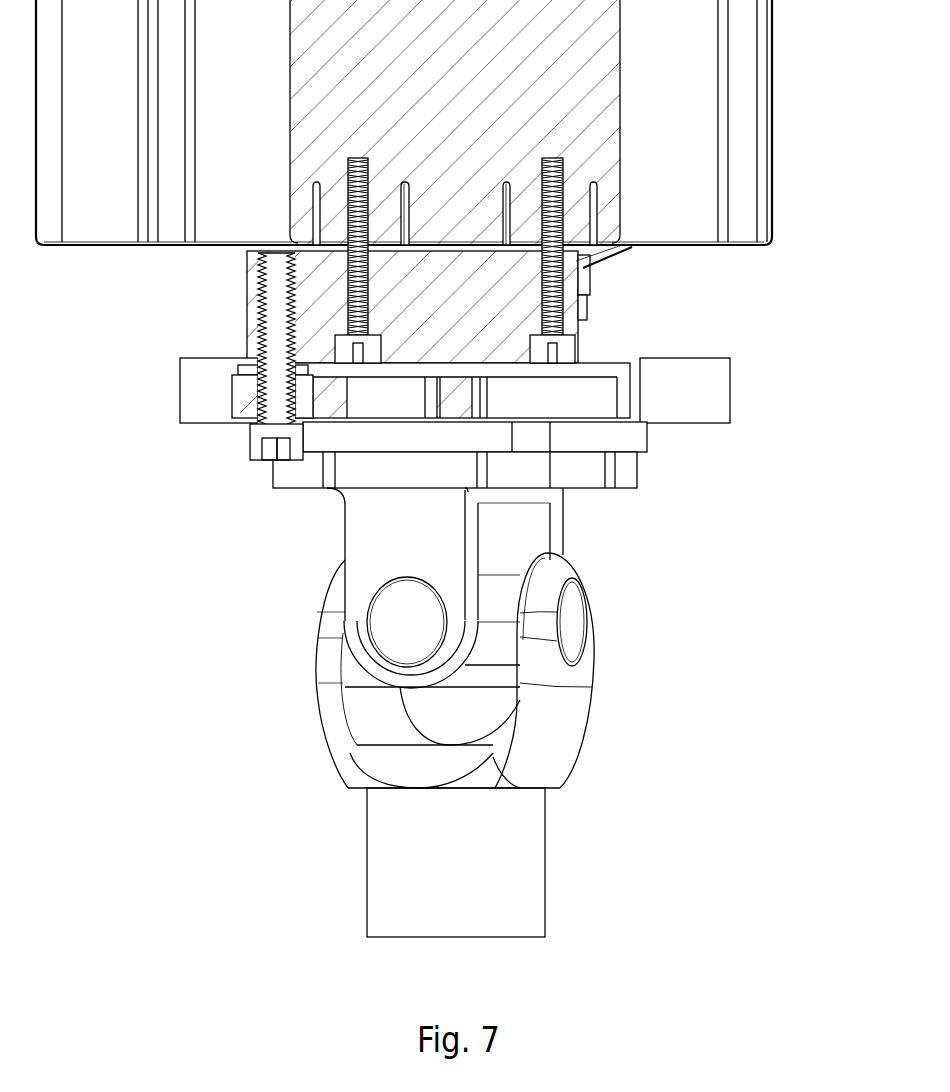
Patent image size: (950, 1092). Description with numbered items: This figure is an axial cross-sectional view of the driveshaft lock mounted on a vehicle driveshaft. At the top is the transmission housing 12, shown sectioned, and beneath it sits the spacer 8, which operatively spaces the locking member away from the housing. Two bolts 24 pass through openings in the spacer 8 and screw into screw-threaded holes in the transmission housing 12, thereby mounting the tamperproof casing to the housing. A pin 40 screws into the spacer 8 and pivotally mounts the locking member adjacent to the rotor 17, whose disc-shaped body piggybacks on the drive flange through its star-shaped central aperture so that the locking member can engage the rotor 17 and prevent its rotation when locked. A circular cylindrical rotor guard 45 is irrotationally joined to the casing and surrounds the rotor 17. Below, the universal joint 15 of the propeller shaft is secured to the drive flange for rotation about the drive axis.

The transmission housing 12 is at (752, 145).
The spacer 8 is at (449, 334).
The bolts 24 is at (373, 289).
The rotor 17 is at (585, 393).
The rotor guard 45 is at (722, 395).
The pin 40 is at (258, 433).
The universal joint 15 is at (600, 577).